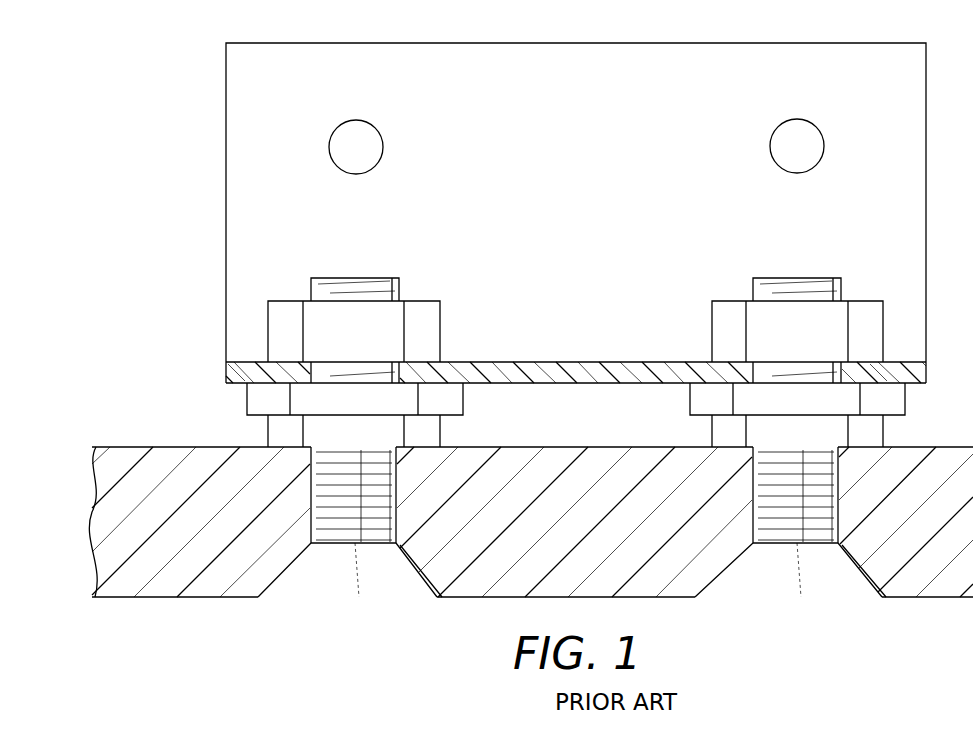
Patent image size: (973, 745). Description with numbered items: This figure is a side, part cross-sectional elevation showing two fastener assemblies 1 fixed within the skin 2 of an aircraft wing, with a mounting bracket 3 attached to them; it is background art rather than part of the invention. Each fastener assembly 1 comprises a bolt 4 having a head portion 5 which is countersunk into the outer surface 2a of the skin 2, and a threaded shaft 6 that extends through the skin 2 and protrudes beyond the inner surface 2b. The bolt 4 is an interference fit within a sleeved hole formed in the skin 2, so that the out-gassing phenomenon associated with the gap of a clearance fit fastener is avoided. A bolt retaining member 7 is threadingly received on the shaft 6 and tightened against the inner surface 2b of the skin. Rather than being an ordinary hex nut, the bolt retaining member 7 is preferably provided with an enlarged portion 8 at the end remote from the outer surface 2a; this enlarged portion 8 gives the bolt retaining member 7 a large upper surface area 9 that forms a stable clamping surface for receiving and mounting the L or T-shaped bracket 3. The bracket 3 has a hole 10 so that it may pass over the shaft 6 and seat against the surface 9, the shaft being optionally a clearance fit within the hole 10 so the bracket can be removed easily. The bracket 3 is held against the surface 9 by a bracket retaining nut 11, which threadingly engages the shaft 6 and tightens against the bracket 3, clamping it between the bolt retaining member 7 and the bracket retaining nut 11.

The fastener assembly 1 is at (250, 306).
The skin 2 is at (531, 522).
The outer surface 2a is at (130, 597).
The inner surface 2b is at (128, 446).
The mounting bracket 3 is at (226, 62).
The bolt 4 is at (412, 490).
The head portion 5 is at (357, 597).
The threaded shaft 6 is at (358, 290).
The bolt retaining member 7 is at (486, 412).
The enlarged portion 8 is at (247, 404).
The upper surface area 9 is at (234, 372).
The hole 10 is at (402, 378).
The bracket retaining nut 11 is at (419, 301).